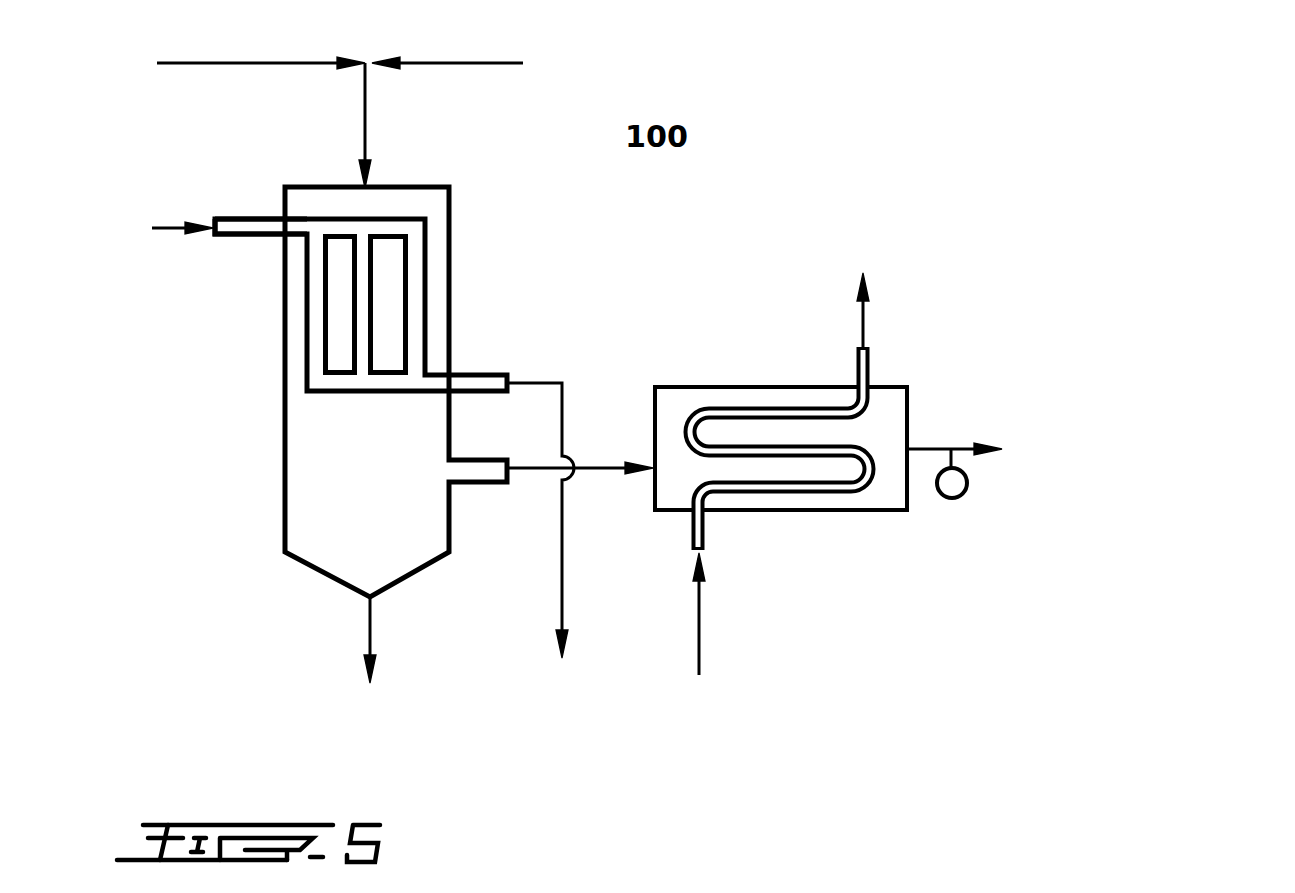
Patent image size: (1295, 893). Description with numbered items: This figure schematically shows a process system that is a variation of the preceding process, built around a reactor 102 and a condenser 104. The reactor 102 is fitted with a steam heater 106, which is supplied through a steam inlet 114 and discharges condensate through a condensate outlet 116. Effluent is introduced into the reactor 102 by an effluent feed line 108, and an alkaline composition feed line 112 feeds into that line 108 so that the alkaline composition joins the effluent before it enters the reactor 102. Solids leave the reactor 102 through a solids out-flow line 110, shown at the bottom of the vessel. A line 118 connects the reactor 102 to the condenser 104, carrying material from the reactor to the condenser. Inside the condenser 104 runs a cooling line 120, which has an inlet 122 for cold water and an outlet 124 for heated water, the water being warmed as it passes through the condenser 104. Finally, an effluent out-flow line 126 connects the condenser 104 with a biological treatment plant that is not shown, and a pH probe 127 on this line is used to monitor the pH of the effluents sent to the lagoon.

The reactor 102 is at (468, 313).
The condenser 104 is at (710, 366).
The steam heater 106 is at (446, 246).
The effluent feed line 108 is at (293, 88).
The solids out-flow line 110 is at (391, 630).
The alkaline composition feed line 112 is at (437, 88).
The steam inlet 114 is at (247, 196).
The condensate outlet 116 is at (581, 412).
The line 118 is at (608, 489).
The cooling line 120 is at (825, 518).
The inlet 122 is at (706, 528).
The outlet 124 is at (890, 363).
The effluent out-flow line 126 is at (950, 423).
The pH probe 127 is at (951, 518).